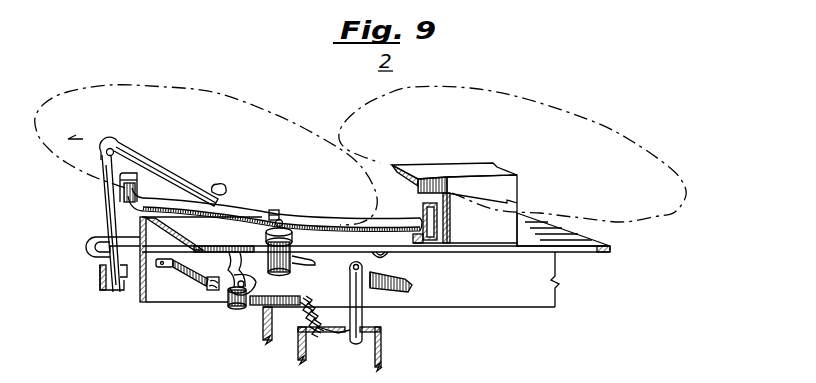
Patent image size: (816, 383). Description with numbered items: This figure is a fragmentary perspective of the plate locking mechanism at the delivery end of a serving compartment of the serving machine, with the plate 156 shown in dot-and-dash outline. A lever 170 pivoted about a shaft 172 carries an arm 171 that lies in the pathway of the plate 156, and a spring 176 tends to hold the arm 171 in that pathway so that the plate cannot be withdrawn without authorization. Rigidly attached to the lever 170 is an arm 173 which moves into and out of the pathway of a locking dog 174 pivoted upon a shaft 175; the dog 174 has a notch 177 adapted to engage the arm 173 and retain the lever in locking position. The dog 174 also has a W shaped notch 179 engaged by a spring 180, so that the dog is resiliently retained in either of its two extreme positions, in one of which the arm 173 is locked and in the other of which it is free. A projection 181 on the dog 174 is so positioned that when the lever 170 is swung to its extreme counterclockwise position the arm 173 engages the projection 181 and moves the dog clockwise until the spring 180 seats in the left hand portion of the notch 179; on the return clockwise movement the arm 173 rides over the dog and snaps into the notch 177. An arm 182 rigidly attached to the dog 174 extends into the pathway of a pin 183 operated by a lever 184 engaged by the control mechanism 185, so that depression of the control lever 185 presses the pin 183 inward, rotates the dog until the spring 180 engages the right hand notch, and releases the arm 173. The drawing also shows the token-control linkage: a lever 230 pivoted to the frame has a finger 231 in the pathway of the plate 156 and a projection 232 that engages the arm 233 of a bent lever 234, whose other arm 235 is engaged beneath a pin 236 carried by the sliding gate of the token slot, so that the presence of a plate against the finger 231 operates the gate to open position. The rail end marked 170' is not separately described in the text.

The plate 156 is at (107, 87).
The lever 170 is at (275, 208).
The rail end bracket 170' is at (501, 205).
The arm 171 is at (120, 184).
The shaft 172 is at (284, 220).
The arm 173 is at (292, 270).
The locking dog 174 is at (230, 264).
The shaft 175 is at (228, 295).
The spring 176 is at (315, 263).
The notch 177 is at (259, 284).
The W shaped notch 179 is at (211, 287).
The spring 180 is at (182, 276).
The projection 181 is at (253, 313).
The arm 182 is at (299, 300).
The pin 183 is at (341, 333).
The lever 184 is at (362, 317).
The control mechanism 185 is at (412, 279).
The lever 230 is at (390, 257).
The finger 231 is at (276, 210).
The projection 232 is at (86, 243).
The arm 233 is at (128, 292).
The bent lever 234 is at (110, 217).
The arm 235 is at (153, 167).
The pin 236 is at (222, 184).